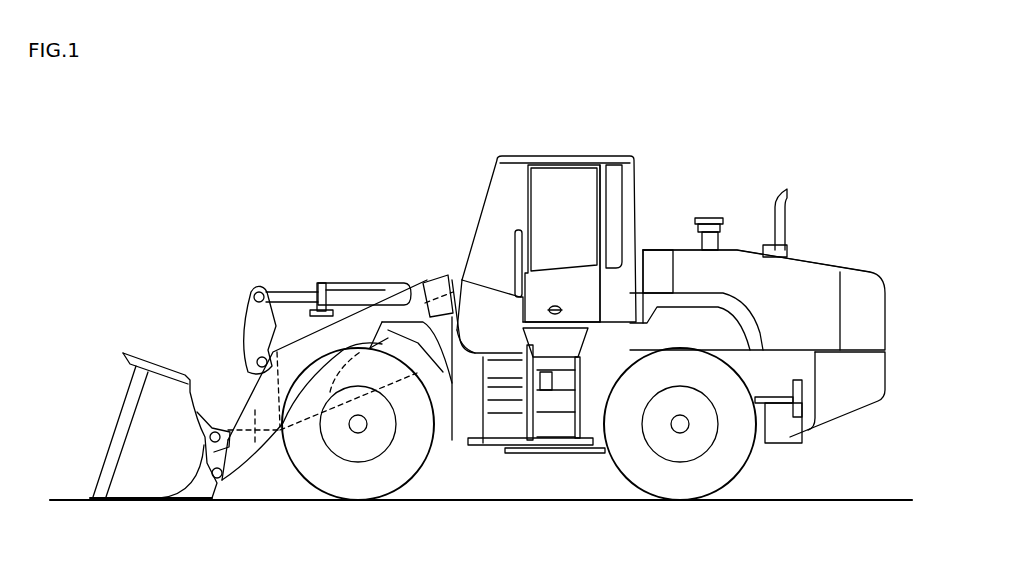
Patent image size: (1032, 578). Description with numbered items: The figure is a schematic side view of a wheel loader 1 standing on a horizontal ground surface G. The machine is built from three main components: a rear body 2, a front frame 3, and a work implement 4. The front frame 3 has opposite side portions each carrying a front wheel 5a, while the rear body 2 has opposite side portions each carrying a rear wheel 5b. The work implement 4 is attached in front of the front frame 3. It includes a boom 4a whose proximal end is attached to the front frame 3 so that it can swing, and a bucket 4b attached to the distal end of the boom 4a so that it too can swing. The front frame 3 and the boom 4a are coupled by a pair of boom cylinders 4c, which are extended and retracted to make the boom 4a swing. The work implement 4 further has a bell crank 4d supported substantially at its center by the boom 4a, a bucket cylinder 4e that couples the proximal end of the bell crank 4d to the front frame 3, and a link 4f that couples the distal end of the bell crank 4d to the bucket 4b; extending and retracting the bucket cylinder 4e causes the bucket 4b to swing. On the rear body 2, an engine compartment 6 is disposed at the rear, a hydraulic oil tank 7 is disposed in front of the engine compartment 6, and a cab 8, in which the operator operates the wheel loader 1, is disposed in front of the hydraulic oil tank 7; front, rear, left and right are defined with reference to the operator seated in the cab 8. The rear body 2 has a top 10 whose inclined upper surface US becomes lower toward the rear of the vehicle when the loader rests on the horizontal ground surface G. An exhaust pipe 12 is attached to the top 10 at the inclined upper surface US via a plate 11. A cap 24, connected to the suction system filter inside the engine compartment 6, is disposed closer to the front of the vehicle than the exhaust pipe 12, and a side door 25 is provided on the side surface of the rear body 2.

The wheel loader 1 is at (741, 119).
The rear body 2 is at (851, 390).
The front frame 3 is at (460, 422).
The work implement 4 is at (225, 339).
The boom 4a is at (303, 351).
The bucket 4b is at (152, 450).
The boom cylinder 4c is at (417, 360).
The bell crank 4d is at (250, 331).
The bucket cylinder 4e is at (360, 288).
The link 4f is at (247, 445).
The front wheel 5a is at (365, 475).
The rear wheel 5b is at (683, 477).
The engine compartment 6 is at (791, 280).
The hydraulic oil tank 7 is at (655, 258).
The cab 8 is at (589, 147).
The top 10 is at (830, 265).
The plate 11 is at (759, 253).
The exhaust pipe 12 is at (777, 203).
The cap 24 is at (710, 218).
The side door 25 is at (812, 315).
The inclined upper surface US is at (810, 260).
The horizontal ground surface G is at (892, 502).